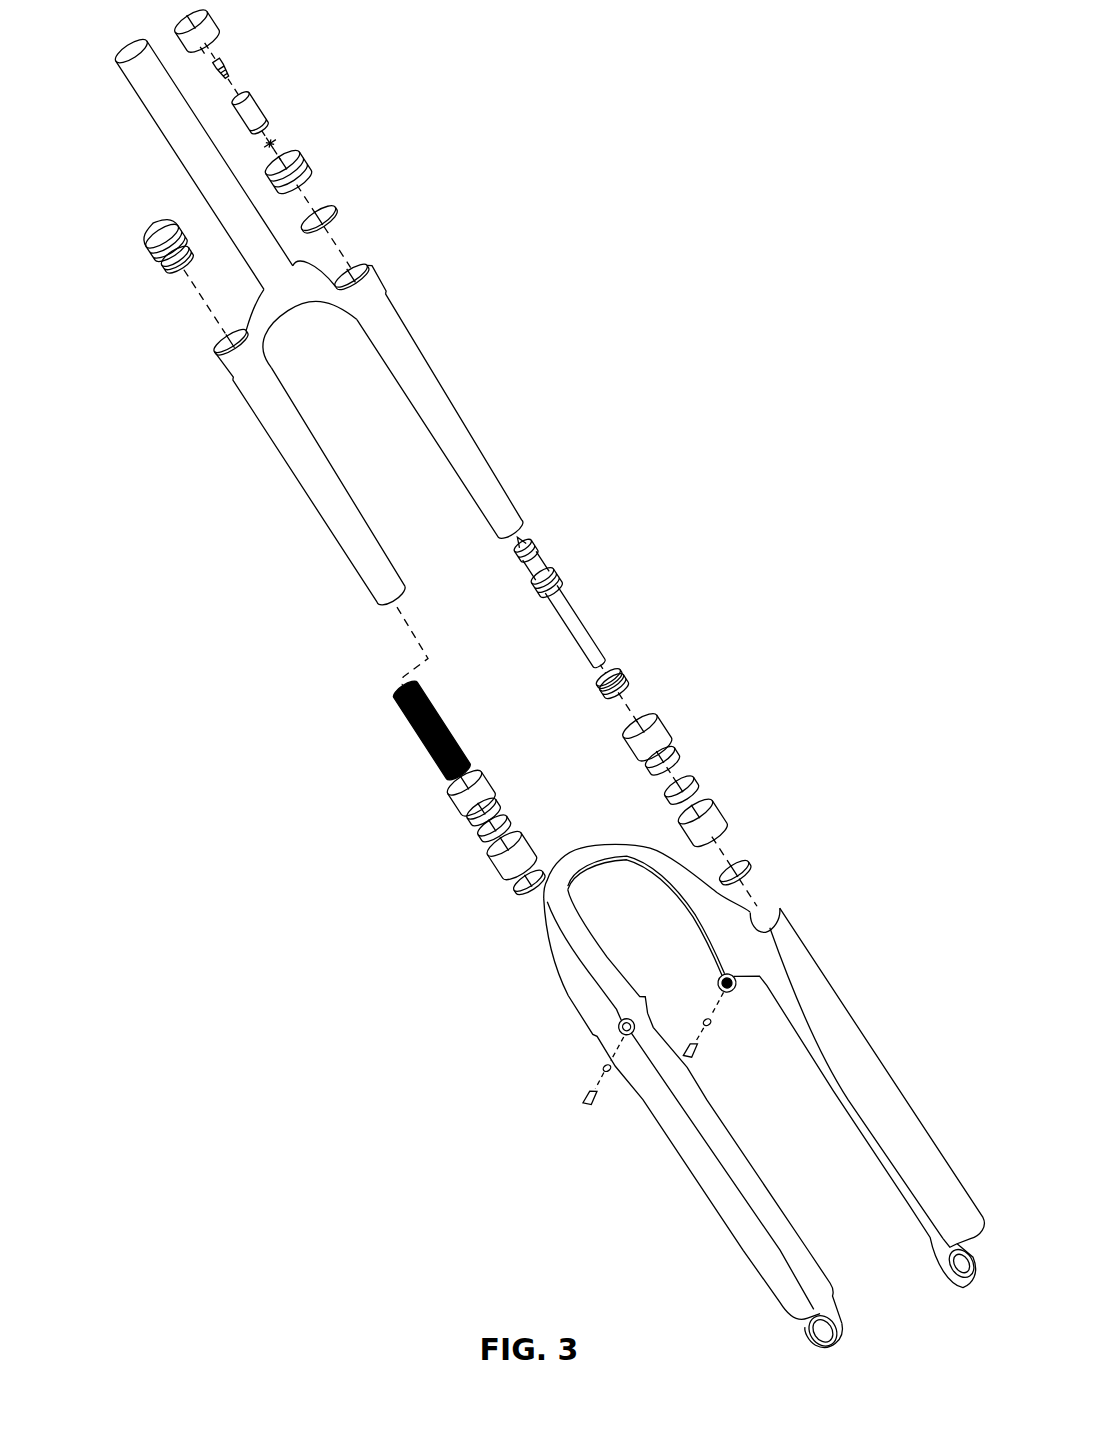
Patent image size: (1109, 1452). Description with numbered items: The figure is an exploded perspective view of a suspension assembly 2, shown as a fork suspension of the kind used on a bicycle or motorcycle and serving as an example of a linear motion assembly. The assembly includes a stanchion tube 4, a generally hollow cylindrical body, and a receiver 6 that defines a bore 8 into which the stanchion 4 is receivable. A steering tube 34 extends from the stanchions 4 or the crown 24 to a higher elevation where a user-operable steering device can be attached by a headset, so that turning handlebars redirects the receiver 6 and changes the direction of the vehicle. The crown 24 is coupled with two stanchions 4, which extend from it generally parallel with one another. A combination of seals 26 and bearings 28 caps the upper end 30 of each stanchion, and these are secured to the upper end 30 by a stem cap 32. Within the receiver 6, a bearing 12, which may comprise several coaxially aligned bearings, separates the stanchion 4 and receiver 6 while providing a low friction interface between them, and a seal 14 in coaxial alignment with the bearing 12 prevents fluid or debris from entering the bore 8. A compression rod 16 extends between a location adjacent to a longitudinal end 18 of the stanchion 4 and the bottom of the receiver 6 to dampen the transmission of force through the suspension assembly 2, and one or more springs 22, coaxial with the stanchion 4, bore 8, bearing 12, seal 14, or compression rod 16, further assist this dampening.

The suspension assembly 2 is at (536, 706).
The stanchion tube 4 is at (337, 493).
The receiver 6 is at (912, 1120).
The bore 8 is at (768, 912).
The bearing 12 is at (694, 764).
The seal 14 is at (656, 706).
The compression rod 16 is at (575, 622).
The longitudinal end 18 is at (390, 603).
The spring 22 is at (438, 710).
The crown 24 is at (273, 337).
The seal 26 is at (340, 210).
The bearing 28 is at (303, 157).
The upper end 30 is at (365, 267).
The stem cap 32 is at (218, 21).
The steering tube 34 is at (150, 128).